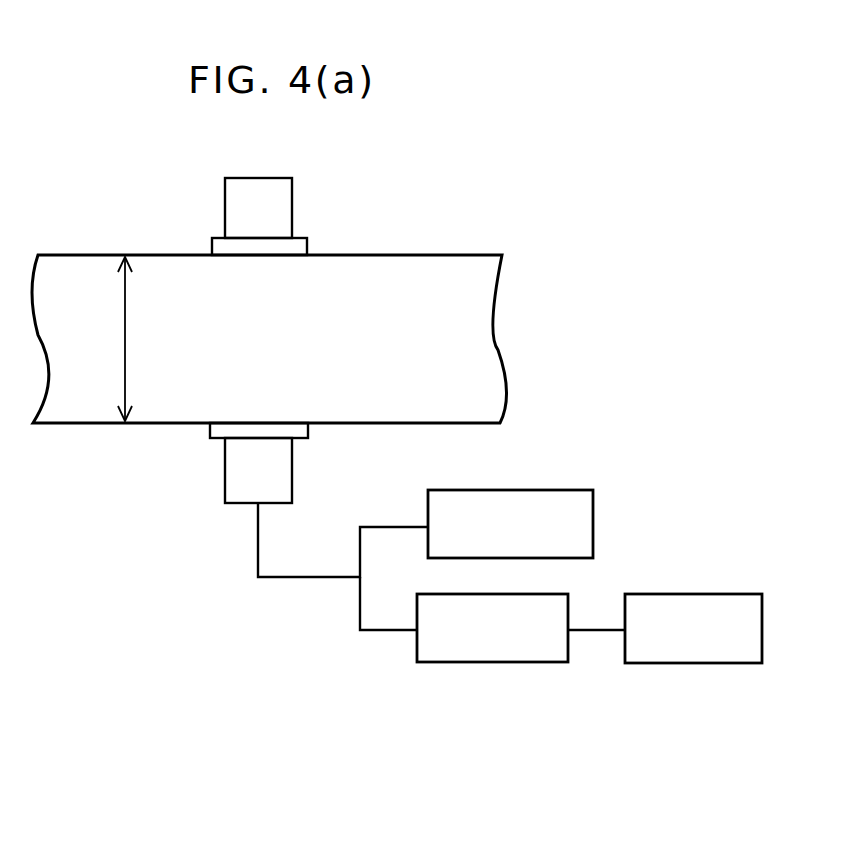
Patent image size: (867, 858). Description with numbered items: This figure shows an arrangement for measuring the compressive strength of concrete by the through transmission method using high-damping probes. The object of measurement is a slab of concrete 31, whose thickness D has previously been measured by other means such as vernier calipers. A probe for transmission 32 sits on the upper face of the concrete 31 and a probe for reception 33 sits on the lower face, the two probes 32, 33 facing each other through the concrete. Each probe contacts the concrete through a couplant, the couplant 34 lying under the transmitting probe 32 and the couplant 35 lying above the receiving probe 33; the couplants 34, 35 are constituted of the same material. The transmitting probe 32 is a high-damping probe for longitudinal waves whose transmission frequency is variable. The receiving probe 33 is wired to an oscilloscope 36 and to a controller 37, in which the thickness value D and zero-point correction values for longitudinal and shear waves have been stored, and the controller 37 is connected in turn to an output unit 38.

The concrete 31 is at (492, 333).
The probe for transmission 32 is at (292, 192).
The probe for reception 33 is at (225, 476).
The couplant 34 is at (308, 241).
The couplant 35 is at (308, 430).
The oscilloscope 36 is at (552, 490).
The controller 37 is at (532, 662).
The output unit 38 is at (737, 663).